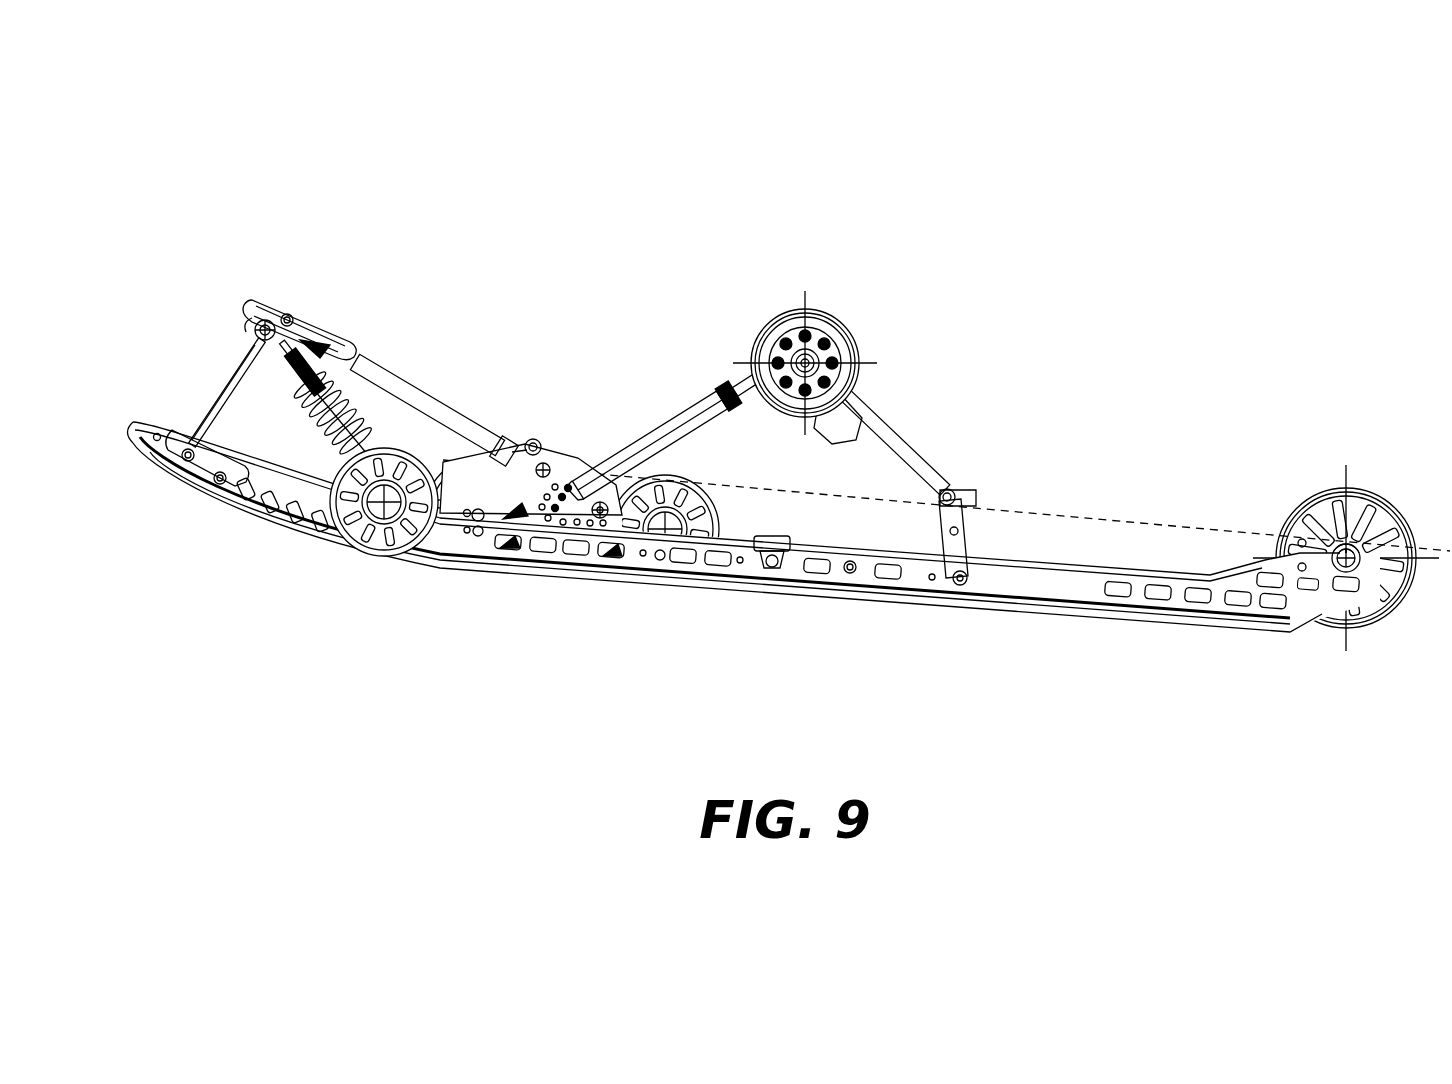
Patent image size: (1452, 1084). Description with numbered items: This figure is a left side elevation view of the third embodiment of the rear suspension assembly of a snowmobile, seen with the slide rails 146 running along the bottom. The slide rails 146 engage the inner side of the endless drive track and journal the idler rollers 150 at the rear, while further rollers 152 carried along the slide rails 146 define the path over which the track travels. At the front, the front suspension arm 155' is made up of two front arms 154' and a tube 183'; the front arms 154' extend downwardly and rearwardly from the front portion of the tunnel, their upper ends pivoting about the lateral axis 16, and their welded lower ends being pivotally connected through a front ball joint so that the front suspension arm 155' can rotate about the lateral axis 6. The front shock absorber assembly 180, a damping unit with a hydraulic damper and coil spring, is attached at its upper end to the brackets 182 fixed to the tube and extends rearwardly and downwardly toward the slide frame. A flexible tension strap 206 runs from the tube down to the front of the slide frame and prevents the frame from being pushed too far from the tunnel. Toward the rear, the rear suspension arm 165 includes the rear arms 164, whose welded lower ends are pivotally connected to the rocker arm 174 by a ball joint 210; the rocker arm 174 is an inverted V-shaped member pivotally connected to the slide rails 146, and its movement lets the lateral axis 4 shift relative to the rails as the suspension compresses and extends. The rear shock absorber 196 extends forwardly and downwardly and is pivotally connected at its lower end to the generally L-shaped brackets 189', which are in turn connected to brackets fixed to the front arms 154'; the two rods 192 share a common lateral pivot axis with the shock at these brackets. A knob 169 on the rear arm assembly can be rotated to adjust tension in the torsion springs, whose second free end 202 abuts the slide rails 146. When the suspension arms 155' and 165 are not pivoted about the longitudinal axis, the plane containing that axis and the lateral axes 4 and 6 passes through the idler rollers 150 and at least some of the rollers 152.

The lateral axis 4 is at (965, 497).
The lateral axis 6 is at (547, 460).
The lateral axis 16 is at (257, 306).
The slide rails 146 is at (1120, 597).
The idler rollers 150 is at (1370, 497).
The rollers 152 is at (474, 565).
The front arms 154' is at (438, 357).
The front suspension arm 155' is at (325, 334).
The rear arms 164 is at (913, 455).
The rear suspension arm 165 is at (967, 478).
The knob 169 is at (863, 403).
The rocker arm 174 is at (960, 583).
The front shock absorber assembly 180 is at (335, 380).
The brackets 182 is at (239, 292).
The tube 183' is at (187, 308).
The L-shaped brackets 189' is at (531, 425).
The rods 192 is at (628, 552).
The rear shock absorber 196 is at (667, 420).
The second free end 202 is at (693, 397).
The flexible tension straps 206 is at (227, 378).
The ball joint 210 is at (976, 500).